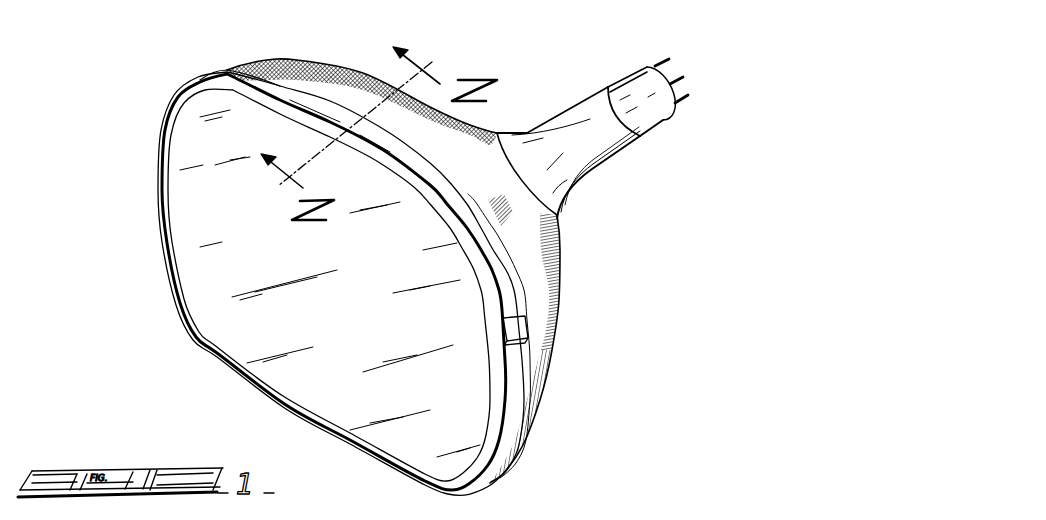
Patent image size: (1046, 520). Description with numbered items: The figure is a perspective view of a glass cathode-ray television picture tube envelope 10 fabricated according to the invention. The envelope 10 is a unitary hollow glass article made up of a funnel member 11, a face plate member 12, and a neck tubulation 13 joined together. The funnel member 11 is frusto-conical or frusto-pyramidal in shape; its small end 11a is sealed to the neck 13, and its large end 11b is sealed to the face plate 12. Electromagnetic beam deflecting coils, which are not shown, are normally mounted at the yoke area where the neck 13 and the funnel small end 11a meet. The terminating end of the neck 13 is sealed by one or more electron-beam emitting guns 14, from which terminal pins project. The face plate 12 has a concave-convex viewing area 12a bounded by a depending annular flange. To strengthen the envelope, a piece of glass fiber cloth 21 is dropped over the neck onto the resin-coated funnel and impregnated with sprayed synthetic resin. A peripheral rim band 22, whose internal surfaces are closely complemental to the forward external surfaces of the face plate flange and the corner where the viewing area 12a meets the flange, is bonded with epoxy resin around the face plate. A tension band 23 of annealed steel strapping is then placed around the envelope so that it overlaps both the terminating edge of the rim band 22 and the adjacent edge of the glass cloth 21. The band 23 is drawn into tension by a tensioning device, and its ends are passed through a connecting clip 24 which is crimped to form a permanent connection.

The glass cathode-ray picture tube envelope 10 is at (401, 259).
The funnel member 11 is at (540, 272).
The small end of funnel member 11a is at (510, 133).
The large end of funnel member 11b is at (251, 66).
The face plate member 12 is at (188, 218).
The viewing area 12a is at (363, 313).
The neck tubulation 13 is at (581, 101).
The electron-beam emitting guns 14 is at (657, 113).
The glass fiber cloth 21 is at (340, 34).
The peripheral rim band 22 is at (193, 335).
The tension band 23 is at (228, 72).
The connecting clip 24 is at (528, 326).